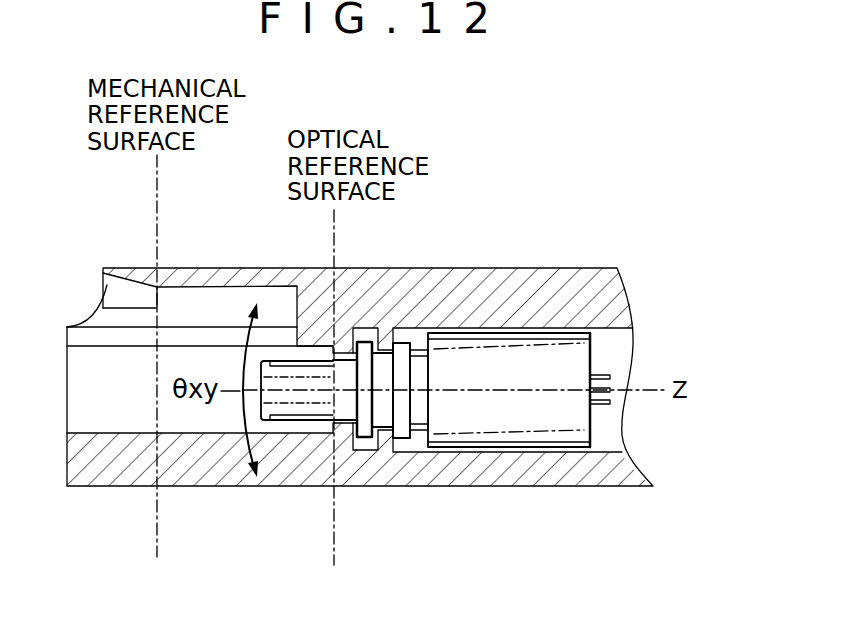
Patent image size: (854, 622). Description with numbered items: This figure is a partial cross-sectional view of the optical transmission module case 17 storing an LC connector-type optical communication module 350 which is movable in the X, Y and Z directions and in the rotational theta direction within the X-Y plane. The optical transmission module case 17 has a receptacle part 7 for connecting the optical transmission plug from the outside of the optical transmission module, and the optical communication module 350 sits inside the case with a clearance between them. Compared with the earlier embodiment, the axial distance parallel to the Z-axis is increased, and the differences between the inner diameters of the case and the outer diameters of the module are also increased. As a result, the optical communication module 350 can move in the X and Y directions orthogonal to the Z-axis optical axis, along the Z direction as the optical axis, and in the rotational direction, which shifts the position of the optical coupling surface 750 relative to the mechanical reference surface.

The receptacle part 7 is at (107, 363).
The optical coupling surface 750 is at (330, 383).
The optical communication module 350 is at (593, 427).
The optical transmission module case 17 is at (540, 487).